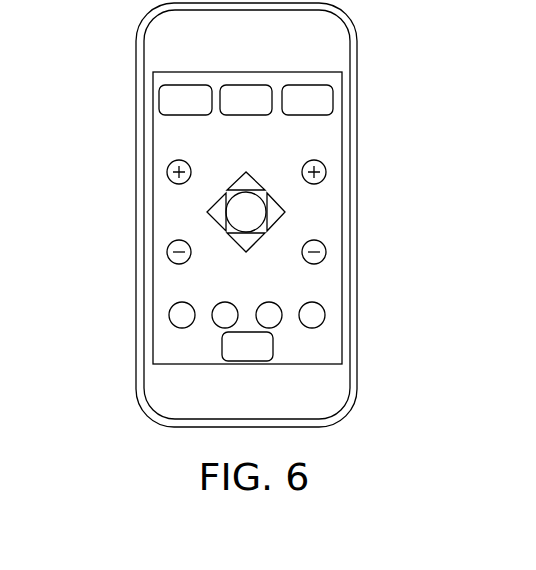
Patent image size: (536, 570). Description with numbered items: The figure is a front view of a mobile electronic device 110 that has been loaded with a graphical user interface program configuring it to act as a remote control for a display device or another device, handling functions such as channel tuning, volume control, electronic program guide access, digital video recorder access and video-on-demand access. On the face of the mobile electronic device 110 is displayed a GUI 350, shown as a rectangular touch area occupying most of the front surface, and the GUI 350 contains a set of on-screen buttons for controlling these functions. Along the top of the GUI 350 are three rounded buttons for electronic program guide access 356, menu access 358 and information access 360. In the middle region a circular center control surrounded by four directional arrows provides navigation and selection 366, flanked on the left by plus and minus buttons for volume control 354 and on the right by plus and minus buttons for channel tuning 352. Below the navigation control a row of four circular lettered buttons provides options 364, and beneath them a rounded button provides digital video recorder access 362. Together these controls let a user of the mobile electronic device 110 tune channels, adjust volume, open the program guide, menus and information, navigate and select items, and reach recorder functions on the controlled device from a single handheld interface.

The mobile electronic device 110 is at (136, 76).
The graphical user interface 350 is at (153, 106).
The channel tuning buttons 352 is at (367, 152).
The volume control buttons 354 is at (130, 153).
The electronic program guide access button 356 is at (190, 85).
The menu access button 358 is at (255, 85).
The information access button 360 is at (316, 85).
The digital video recorder access button 362 is at (272, 357).
The options buttons 364 is at (335, 310).
The navigation and selection button 366 is at (203, 173).